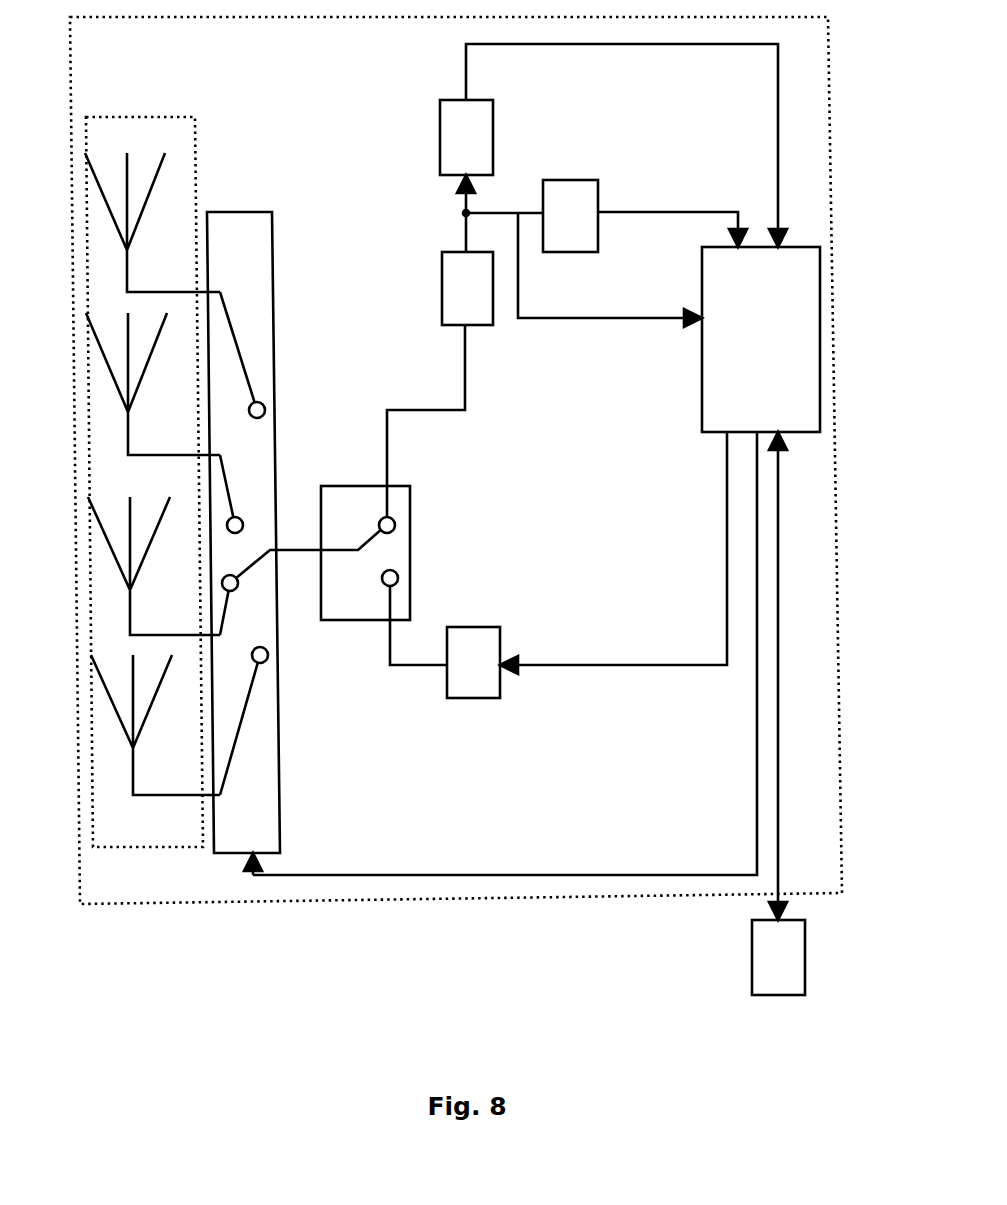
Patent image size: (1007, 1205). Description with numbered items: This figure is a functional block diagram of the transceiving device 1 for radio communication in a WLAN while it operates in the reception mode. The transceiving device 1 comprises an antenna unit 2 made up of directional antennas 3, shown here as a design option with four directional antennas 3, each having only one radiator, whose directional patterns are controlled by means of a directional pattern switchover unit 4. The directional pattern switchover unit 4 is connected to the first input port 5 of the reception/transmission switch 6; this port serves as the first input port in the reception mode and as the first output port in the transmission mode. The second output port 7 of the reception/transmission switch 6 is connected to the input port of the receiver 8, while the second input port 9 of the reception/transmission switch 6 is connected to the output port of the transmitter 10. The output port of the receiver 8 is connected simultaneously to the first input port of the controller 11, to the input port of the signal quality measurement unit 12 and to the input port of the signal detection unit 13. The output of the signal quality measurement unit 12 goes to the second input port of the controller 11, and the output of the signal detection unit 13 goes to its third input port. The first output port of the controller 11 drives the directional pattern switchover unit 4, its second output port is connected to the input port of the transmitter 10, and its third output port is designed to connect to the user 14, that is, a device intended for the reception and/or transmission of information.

The transceiving device 1 is at (498, 897).
The antenna unit 2 is at (117, 828).
The directional antenna 3 is at (148, 190).
The directional pattern switchover unit 4 is at (242, 222).
The first input port 5 is at (368, 533).
The reception/transmission switch 6 is at (337, 597).
The second output port 7 is at (388, 498).
The receiver 8 is at (448, 298).
The second input port 9 is at (393, 605).
The transmitter 10 is at (478, 650).
The controller 11 is at (787, 293).
The signal quality measurement unit 12 is at (575, 197).
The signal detection unit 13 is at (462, 115).
The user 14 is at (763, 948).